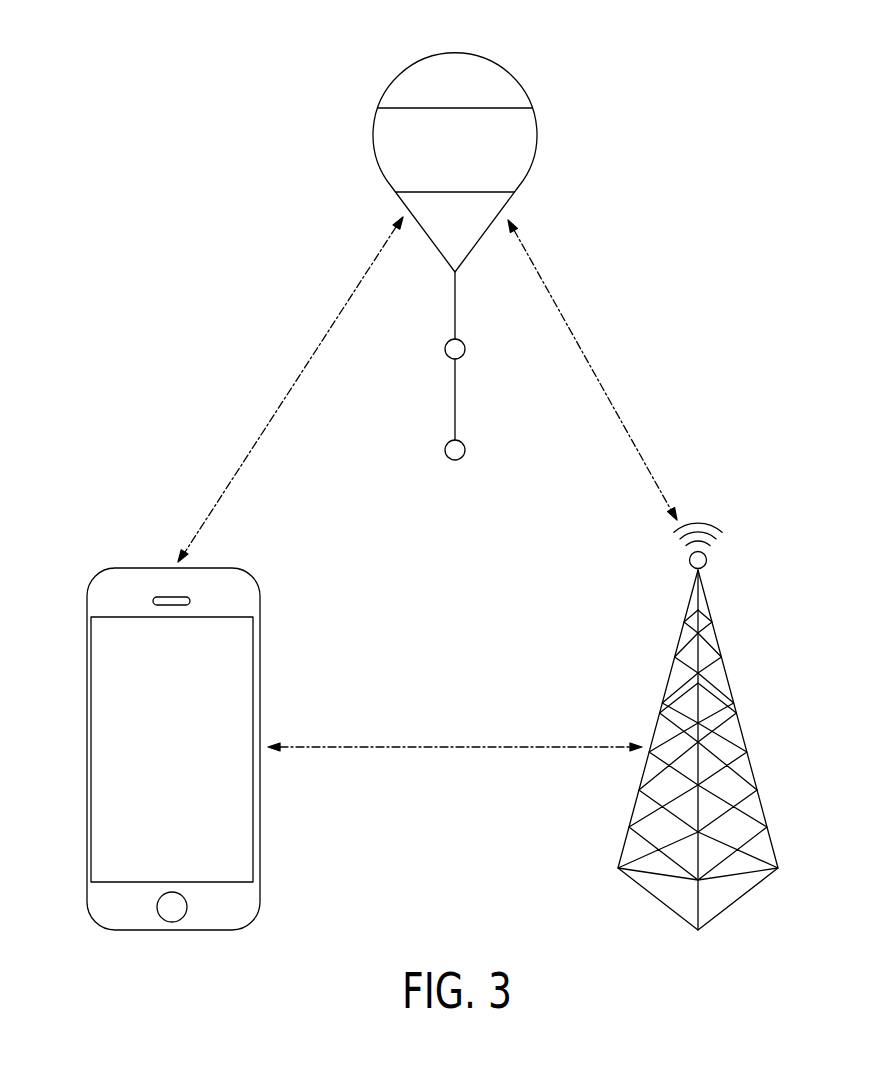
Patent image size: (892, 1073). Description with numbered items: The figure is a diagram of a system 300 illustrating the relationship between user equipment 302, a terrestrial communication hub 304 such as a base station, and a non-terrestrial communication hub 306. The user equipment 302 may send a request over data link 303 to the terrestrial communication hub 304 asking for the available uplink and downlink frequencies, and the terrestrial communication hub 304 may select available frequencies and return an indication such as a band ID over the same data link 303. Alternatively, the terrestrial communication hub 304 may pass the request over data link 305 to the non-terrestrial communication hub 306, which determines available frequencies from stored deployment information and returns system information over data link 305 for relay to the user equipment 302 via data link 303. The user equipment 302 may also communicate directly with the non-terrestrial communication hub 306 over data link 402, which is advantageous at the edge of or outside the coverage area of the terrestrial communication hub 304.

The system 300 is at (188, 183).
The user equipment 302 is at (145, 568).
The data link 303 is at (468, 745).
The terrestrial communication hub 304 is at (743, 717).
The data link 305 is at (593, 371).
The non-terrestrial communication hub 306 is at (454, 53).
The data link 402 is at (292, 390).